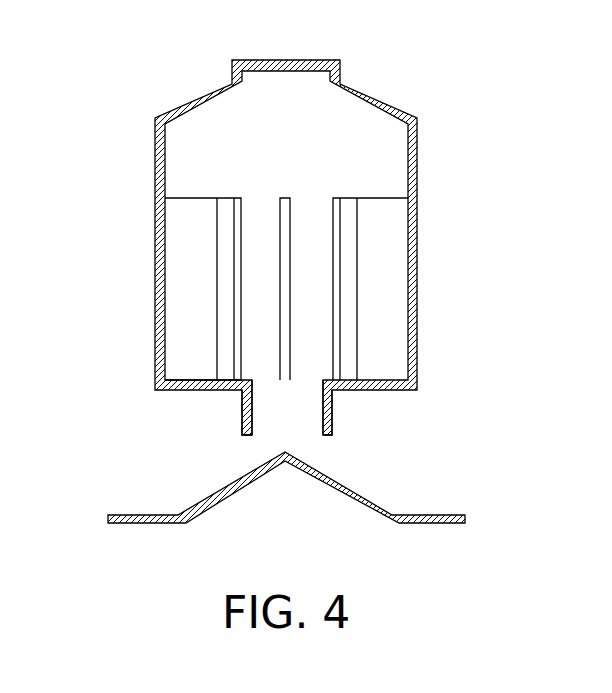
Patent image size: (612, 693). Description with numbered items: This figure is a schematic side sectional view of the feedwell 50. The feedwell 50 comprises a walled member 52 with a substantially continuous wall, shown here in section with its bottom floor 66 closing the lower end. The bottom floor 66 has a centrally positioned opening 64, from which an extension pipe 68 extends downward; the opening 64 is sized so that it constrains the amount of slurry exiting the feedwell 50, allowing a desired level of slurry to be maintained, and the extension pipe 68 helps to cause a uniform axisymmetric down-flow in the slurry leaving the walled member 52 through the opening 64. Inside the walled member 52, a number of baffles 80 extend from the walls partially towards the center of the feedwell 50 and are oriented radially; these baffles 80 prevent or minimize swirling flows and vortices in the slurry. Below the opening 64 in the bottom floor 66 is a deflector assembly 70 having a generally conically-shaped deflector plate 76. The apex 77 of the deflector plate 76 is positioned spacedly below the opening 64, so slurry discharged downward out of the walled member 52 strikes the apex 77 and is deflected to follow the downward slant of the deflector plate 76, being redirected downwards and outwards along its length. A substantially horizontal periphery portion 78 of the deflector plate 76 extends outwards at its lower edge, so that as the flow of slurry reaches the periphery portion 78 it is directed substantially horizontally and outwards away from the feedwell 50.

The feedwell 50 is at (305, 248).
The walled member 52 is at (155, 172).
The baffles 80 is at (288, 198).
The bottom floor 66 is at (205, 378).
The extension pipe 68 is at (242, 418).
The opening 64 is at (302, 385).
The deflector assembly 70 is at (318, 505).
The apex 77 is at (300, 443).
The deflector plate 76 is at (344, 497).
The periphery portion 78 is at (433, 525).